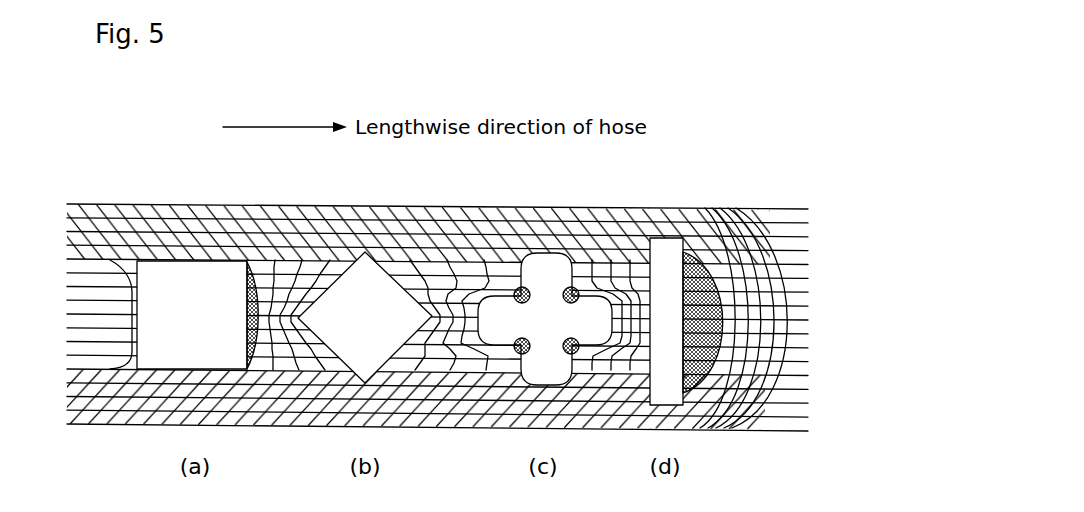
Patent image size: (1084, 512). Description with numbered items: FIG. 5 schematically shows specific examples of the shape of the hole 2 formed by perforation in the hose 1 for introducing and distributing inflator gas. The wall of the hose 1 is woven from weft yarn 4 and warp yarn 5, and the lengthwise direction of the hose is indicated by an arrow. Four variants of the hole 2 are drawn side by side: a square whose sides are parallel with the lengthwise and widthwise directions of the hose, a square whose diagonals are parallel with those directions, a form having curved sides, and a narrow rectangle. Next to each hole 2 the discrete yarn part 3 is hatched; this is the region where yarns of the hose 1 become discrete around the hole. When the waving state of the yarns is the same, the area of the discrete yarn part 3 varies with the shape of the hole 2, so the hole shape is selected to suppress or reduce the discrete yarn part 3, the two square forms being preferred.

The hose 1 is at (793, 207).
The hole 2 is at (187, 277).
The discrete yarn part 3 is at (266, 272).
The weft yarn 4 is at (787, 275).
The warp yarn 5 is at (787, 249).